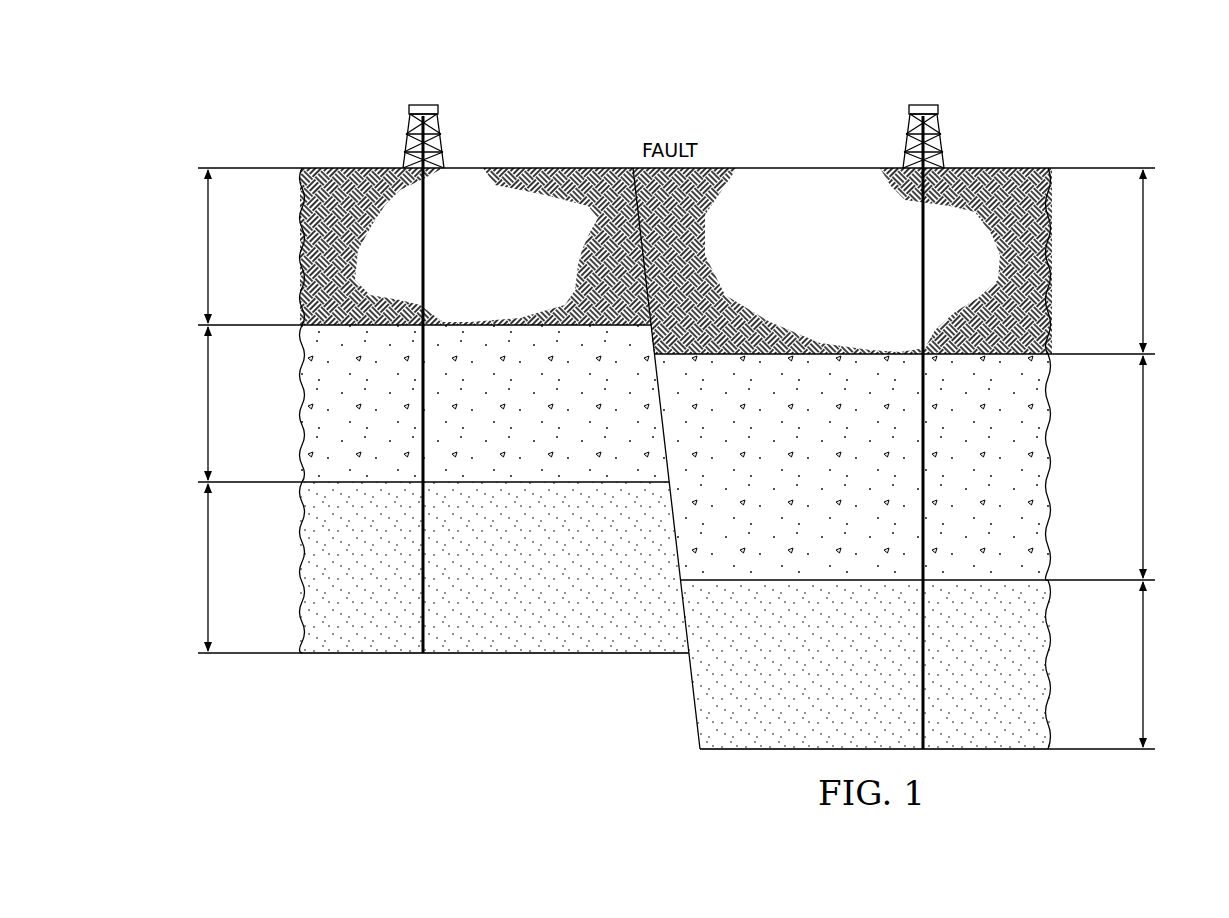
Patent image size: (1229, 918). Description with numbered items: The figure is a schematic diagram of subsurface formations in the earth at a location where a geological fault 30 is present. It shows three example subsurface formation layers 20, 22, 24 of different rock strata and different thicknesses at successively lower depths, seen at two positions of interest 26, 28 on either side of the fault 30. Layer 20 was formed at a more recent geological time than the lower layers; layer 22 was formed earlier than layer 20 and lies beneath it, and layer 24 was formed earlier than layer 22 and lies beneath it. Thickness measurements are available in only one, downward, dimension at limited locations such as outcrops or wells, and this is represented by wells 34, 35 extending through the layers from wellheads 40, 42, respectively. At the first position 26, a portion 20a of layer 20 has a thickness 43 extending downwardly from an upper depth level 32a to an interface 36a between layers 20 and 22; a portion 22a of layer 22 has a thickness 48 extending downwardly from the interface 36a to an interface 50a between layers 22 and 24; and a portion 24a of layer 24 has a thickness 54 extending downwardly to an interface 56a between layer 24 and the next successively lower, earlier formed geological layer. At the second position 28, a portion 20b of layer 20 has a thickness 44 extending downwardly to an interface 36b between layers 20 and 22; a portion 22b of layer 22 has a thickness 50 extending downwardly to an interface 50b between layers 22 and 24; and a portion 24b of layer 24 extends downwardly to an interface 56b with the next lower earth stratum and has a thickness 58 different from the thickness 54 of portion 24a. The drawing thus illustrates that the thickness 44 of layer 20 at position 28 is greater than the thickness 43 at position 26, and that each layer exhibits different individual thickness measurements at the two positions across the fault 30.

The subsurface formation layer 20 is at (292, 216).
The portion of layer 20 20a is at (302, 270).
The portion of layer 20 20b is at (1050, 276).
The subsurface formation layer 22 is at (292, 376).
The portion of layer 22 22a is at (302, 430).
The portion of layer 22 22b is at (1050, 478).
The subsurface formation layer 24 is at (292, 534).
The portion of layer 24 24a is at (302, 586).
The portion of layer 24 24b is at (1040, 678).
The position of interest 26 is at (318, 88).
The position of interest 28 is at (1024, 86).
The geological fault 30 is at (640, 252).
The upper depth level 32a is at (537, 172).
The well 34 is at (422, 402).
The well 35 is at (930, 468).
The interface 36a is at (472, 325).
The interface 36b is at (868, 354).
The wellhead 40 is at (405, 150).
The wellhead 42 is at (940, 145).
The thickness 43 is at (206, 250).
The thickness 44 is at (1147, 256).
The thickness 48 is at (207, 406).
The thickness 50 is at (1147, 468).
The interface 50a is at (548, 480).
The interface 50b is at (808, 580).
The thickness 54 is at (208, 592).
The thickness 58 is at (1147, 666).
The interface 56a is at (554, 650).
The interface 56b is at (812, 749).